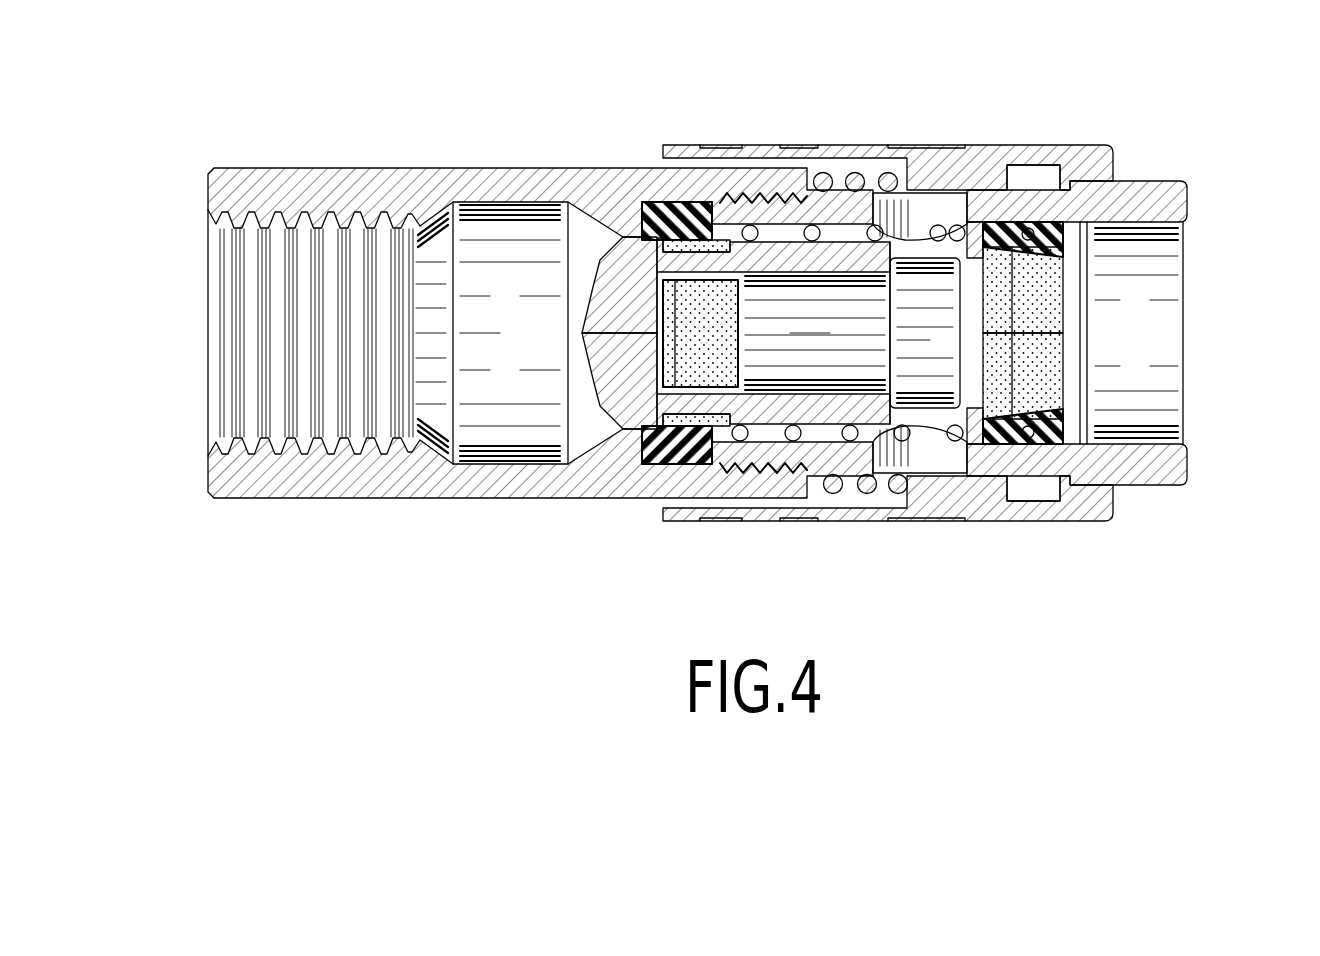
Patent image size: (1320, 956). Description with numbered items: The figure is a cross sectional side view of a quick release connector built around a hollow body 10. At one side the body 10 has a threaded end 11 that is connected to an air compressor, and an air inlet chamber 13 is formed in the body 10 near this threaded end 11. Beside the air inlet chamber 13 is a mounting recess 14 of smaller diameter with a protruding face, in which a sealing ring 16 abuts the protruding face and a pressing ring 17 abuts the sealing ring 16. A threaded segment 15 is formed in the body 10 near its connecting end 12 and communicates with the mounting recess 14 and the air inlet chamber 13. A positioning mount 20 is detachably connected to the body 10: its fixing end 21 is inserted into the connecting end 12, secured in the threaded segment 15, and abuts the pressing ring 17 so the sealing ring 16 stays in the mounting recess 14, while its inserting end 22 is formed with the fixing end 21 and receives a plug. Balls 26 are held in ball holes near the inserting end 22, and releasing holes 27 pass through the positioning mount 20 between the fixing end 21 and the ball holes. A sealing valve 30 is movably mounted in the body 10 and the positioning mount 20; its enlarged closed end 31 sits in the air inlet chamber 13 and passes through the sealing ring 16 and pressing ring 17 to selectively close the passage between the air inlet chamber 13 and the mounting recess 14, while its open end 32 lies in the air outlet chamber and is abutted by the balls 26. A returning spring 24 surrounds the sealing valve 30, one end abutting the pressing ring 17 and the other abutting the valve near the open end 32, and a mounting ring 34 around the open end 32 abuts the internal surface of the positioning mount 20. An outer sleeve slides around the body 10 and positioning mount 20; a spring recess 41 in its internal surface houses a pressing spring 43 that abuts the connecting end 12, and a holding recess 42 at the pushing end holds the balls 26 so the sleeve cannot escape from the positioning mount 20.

The body 10 is at (384, 157).
The threaded end 11 is at (207, 190).
The connecting end 12 is at (816, 175).
The air inlet chamber 13 is at (502, 457).
The mounting recess 14 is at (638, 458).
The threaded segment 15 is at (768, 462).
The sealing ring 16 is at (638, 212).
The pressing ring 17 is at (692, 447).
The positioning mount 20 is at (975, 334).
The fixing end 21 is at (698, 218).
The inserting end 22 is at (1196, 188).
The returning spring 24 is at (955, 433).
The balls 26 is at (1028, 182).
The releasing holes 27 is at (960, 193).
The sealing valve 30 is at (587, 371).
The closed end 31 is at (598, 300).
The open end 32 is at (1030, 434).
The mounting ring 34 is at (1063, 255).
The spring recess 41 is at (833, 500).
The holding recess 42 is at (1030, 496).
The pressing spring 43 is at (889, 178).